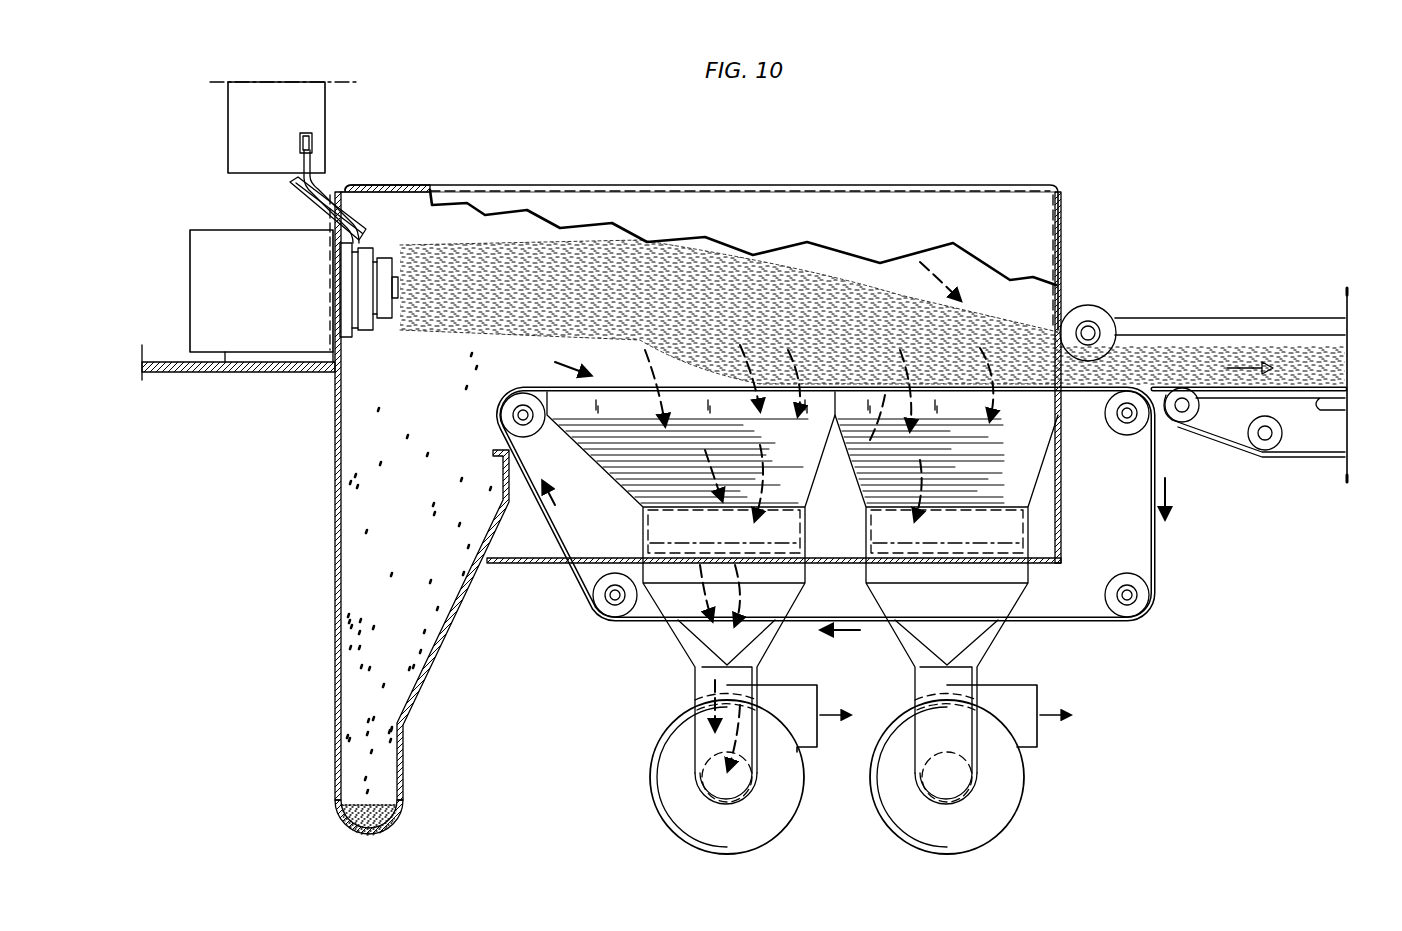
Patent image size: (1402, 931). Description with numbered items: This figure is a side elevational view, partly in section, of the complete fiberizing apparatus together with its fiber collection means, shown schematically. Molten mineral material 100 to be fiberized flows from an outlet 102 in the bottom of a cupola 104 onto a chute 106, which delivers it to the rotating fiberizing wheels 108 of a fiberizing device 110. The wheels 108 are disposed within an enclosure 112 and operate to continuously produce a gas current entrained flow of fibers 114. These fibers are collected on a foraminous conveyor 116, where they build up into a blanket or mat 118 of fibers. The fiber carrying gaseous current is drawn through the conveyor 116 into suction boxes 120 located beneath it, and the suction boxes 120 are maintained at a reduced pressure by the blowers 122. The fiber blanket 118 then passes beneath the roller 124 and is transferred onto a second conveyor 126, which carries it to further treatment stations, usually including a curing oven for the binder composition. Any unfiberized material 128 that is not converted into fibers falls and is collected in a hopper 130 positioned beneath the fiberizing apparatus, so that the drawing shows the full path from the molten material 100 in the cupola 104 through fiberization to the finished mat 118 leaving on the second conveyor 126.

The molten mineral material 100 is at (312, 182).
The outlet 102 is at (310, 140).
The cupola 104 is at (233, 116).
The chute 106 is at (303, 196).
The fiberizing wheels 108 is at (370, 333).
The fiberizing device 110 is at (202, 284).
The enclosure 112 is at (545, 195).
The flow of fibers 114 is at (615, 302).
The foraminous conveyor 116 is at (566, 388).
The blanket or mat 118 is at (1017, 380).
The suction boxes 120 is at (765, 405).
The blowers 122 is at (898, 805).
The roller 124 is at (1095, 312).
The second conveyor 126 is at (1345, 412).
The unfiberized material 128 is at (352, 812).
The hopper 130 is at (400, 792).